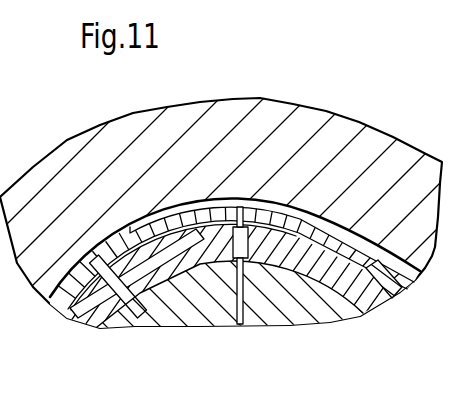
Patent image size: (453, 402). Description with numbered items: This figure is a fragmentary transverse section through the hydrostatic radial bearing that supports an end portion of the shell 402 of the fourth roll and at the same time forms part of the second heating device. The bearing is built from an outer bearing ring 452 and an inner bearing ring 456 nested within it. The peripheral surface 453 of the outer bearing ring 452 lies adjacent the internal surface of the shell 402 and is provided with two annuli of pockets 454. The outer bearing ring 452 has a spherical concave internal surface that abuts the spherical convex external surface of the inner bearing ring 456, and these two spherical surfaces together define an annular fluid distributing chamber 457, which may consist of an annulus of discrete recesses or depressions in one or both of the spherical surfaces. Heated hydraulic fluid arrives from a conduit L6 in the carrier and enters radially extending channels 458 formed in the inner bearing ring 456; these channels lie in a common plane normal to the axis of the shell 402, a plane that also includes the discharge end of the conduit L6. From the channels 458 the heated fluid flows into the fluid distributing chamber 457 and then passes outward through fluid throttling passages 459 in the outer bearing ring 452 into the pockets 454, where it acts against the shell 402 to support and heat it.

The shell 402 is at (399, 163).
The outer bearing ring 452 is at (146, 200).
The peripheral surface 453 is at (334, 212).
The pockets 454 is at (216, 212).
The inner bearing ring 456 is at (364, 280).
The fluid distributing chamber 457 is at (290, 307).
The radially extending channels 458 is at (243, 255).
The fluid throttling passages 459 is at (254, 198).
The conduit L6 is at (219, 323).